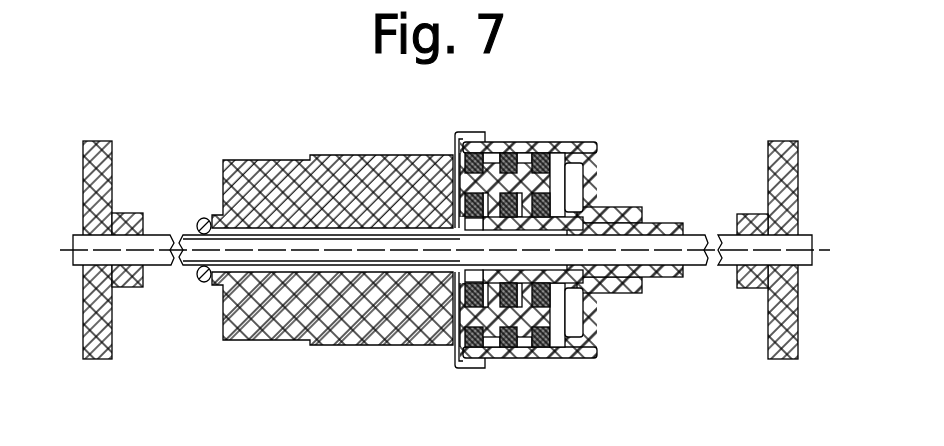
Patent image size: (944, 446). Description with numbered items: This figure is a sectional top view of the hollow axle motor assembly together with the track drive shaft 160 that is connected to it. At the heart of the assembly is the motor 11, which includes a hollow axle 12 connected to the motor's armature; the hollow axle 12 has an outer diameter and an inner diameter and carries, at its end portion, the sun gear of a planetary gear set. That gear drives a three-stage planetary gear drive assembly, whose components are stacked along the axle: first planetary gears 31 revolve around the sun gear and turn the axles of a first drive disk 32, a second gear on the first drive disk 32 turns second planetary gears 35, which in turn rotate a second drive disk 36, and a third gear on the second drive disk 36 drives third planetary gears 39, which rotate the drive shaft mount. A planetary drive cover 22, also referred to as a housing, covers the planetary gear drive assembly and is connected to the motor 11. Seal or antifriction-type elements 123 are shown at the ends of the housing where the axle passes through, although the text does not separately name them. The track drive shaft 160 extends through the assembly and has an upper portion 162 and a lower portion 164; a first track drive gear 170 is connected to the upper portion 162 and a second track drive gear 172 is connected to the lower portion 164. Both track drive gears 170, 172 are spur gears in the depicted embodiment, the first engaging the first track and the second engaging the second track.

The motor 11 is at (390, 346).
The hollow axle 12 is at (333, 226).
The planetary drive cover 22 is at (597, 363).
The first planetary gears 31 is at (463, 352).
The first drive disk 32 is at (493, 175).
The second planetary gears 35 is at (487, 363).
The second drive disk 36 is at (530, 172).
The third planetary gears 39 is at (520, 363).
The seal 123 is at (204, 283).
The track drive shaft 160 is at (720, 266).
The upper portion 162 is at (133, 258).
The lower portion 164 is at (749, 262).
The first track drive gear 170 is at (100, 359).
The second track drive gear 172 is at (780, 359).